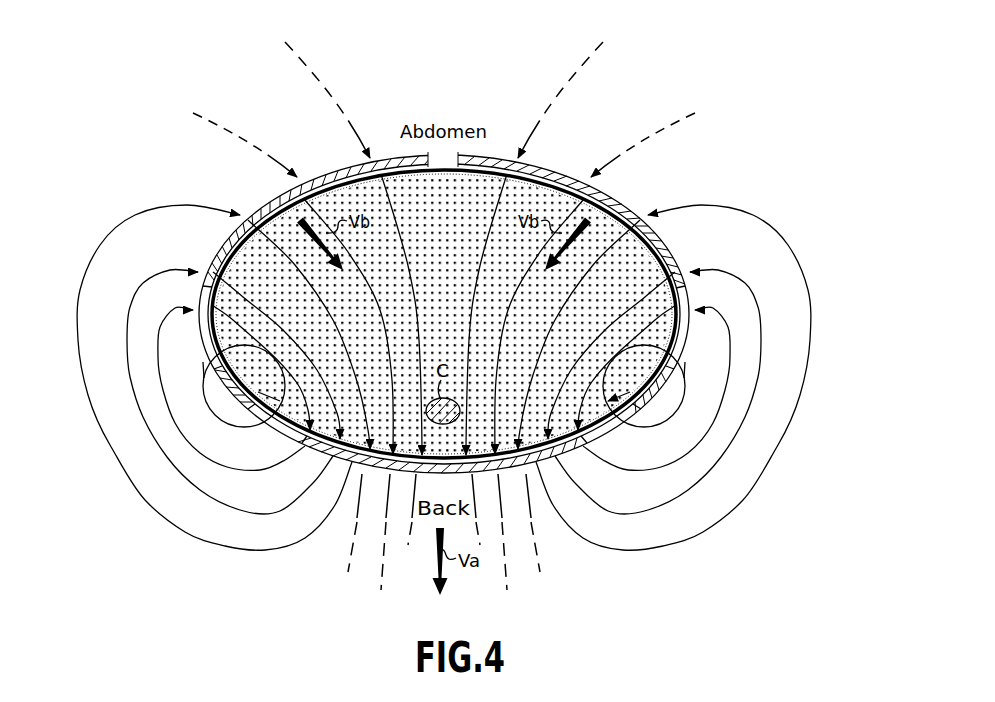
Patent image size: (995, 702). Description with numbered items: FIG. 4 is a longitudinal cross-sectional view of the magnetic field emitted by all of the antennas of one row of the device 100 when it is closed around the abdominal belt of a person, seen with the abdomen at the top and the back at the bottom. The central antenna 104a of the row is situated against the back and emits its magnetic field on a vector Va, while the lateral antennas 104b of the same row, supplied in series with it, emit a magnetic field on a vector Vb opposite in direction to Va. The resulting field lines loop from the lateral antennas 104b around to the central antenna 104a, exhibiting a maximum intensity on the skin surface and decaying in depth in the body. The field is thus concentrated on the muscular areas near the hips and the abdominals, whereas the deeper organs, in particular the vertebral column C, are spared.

The device 100 is at (634, 201).
The central antenna 104a is at (541, 458).
The lateral antennas 104b is at (220, 255).